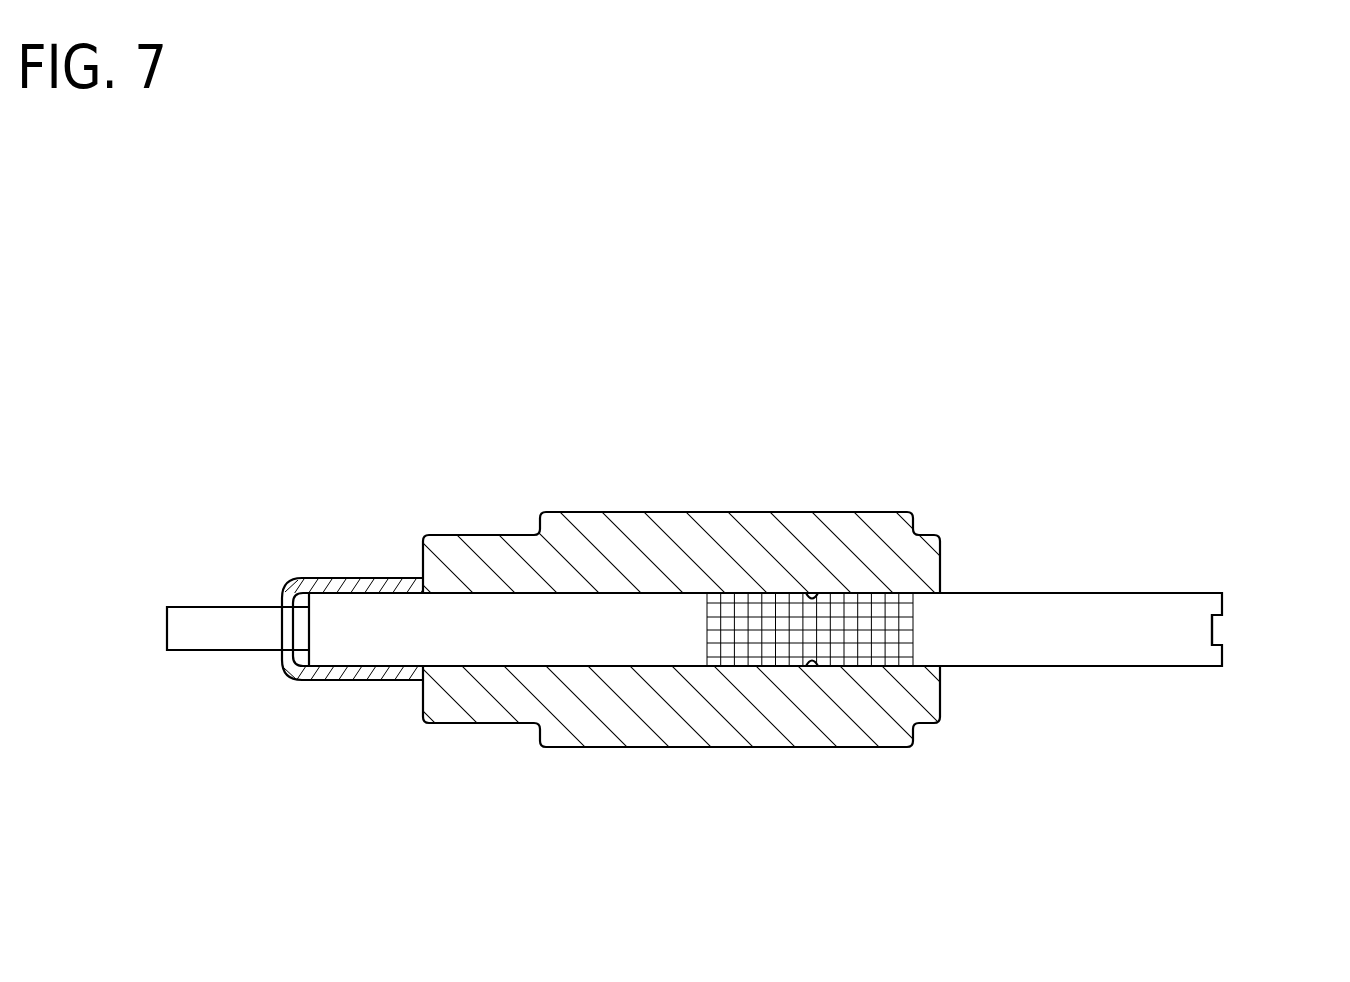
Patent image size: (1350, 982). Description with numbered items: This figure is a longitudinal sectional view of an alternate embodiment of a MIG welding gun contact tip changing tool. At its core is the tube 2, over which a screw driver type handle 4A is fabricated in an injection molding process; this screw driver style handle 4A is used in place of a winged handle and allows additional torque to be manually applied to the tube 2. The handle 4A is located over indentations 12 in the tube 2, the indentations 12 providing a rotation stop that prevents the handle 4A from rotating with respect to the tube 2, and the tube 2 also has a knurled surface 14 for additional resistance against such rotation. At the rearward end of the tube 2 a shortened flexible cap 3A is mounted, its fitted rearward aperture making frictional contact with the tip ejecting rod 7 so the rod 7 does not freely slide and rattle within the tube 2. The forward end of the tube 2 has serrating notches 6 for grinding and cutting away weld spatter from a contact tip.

The tube 2 is at (1070, 642).
The flexible cap 3A is at (330, 677).
The screw driver type handle 4A is at (605, 722).
The serrating notches 6 is at (1225, 625).
The tip ejecting rod 7 is at (185, 635).
The indentations 12 is at (812, 596).
The knurled surface 14 is at (893, 637).